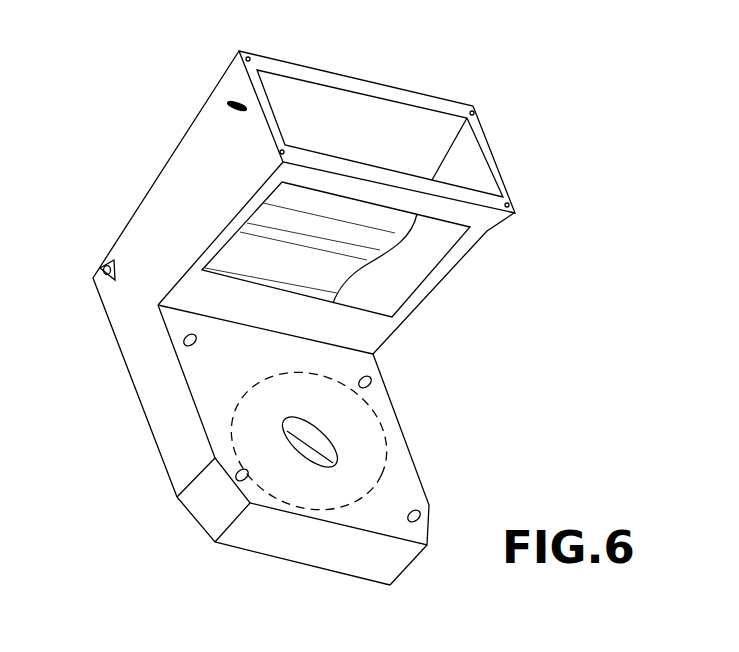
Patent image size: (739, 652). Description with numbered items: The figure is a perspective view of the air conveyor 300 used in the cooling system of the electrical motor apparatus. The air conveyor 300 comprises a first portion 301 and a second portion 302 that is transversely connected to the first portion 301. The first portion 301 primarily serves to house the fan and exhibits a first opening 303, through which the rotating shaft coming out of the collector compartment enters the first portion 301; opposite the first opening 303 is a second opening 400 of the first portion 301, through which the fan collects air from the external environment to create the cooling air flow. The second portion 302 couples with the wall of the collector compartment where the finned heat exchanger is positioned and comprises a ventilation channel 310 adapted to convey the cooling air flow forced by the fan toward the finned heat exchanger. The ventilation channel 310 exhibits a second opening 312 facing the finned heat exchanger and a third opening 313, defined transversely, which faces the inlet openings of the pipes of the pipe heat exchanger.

The air conveyor 300 is at (174, 570).
The first portion 301 is at (163, 388).
The second portion 302 is at (178, 205).
The first opening 303 is at (324, 441).
The ventilation channel 310 is at (317, 265).
The second opening 312 is at (426, 254).
The third opening 313 is at (393, 125).
The second opening 400 is at (367, 510).